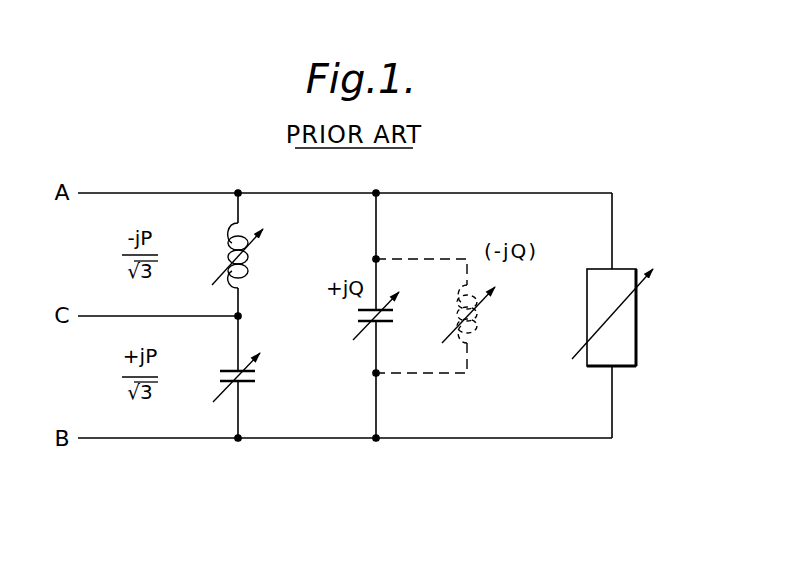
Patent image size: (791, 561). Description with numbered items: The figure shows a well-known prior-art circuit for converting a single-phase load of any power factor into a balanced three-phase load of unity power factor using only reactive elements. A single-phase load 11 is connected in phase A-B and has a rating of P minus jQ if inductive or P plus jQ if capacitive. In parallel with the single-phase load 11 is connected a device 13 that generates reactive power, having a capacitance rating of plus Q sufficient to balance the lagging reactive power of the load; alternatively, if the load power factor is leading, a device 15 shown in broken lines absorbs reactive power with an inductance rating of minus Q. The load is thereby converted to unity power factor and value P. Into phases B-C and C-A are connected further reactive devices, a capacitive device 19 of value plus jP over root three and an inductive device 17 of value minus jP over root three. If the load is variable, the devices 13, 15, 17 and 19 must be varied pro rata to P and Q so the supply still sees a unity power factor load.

The single-phase load 11 is at (623, 329).
The reactive power generation device 13 is at (387, 327).
The reactive power absorption device 15 is at (477, 325).
The reactive device 17 is at (247, 267).
The reactive device 19 is at (247, 386).